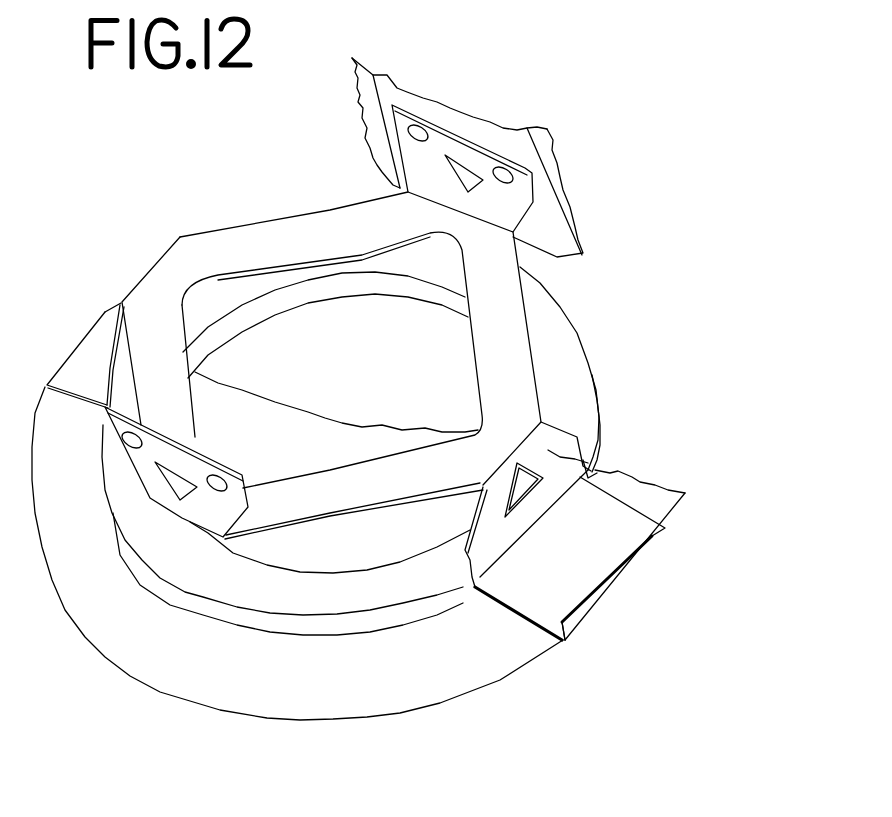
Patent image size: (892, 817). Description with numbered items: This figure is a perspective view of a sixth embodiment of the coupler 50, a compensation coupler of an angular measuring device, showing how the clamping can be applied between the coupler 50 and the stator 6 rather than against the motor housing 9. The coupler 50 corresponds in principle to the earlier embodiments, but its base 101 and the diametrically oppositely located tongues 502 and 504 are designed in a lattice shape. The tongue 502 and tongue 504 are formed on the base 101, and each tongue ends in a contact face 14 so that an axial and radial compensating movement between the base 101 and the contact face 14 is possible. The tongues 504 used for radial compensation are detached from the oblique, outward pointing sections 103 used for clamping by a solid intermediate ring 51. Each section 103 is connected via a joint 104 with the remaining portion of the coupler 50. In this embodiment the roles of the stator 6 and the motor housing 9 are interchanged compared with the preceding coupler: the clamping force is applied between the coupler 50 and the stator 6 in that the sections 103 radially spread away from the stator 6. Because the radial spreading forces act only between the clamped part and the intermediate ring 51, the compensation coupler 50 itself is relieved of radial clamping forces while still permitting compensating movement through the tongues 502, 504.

The coupler 50 is at (615, 310).
The intermediate ring 51 is at (316, 493).
The base 101 is at (331, 451).
The oblique, outward pointing section 103 is at (317, 479).
The joint 104 is at (637, 466).
The tongue 502 is at (319, 360).
The tongue 504 is at (365, 453).
The stator 6 is at (642, 555).
The motor housing 9 is at (475, 157).
The contact face 14 is at (587, 666).